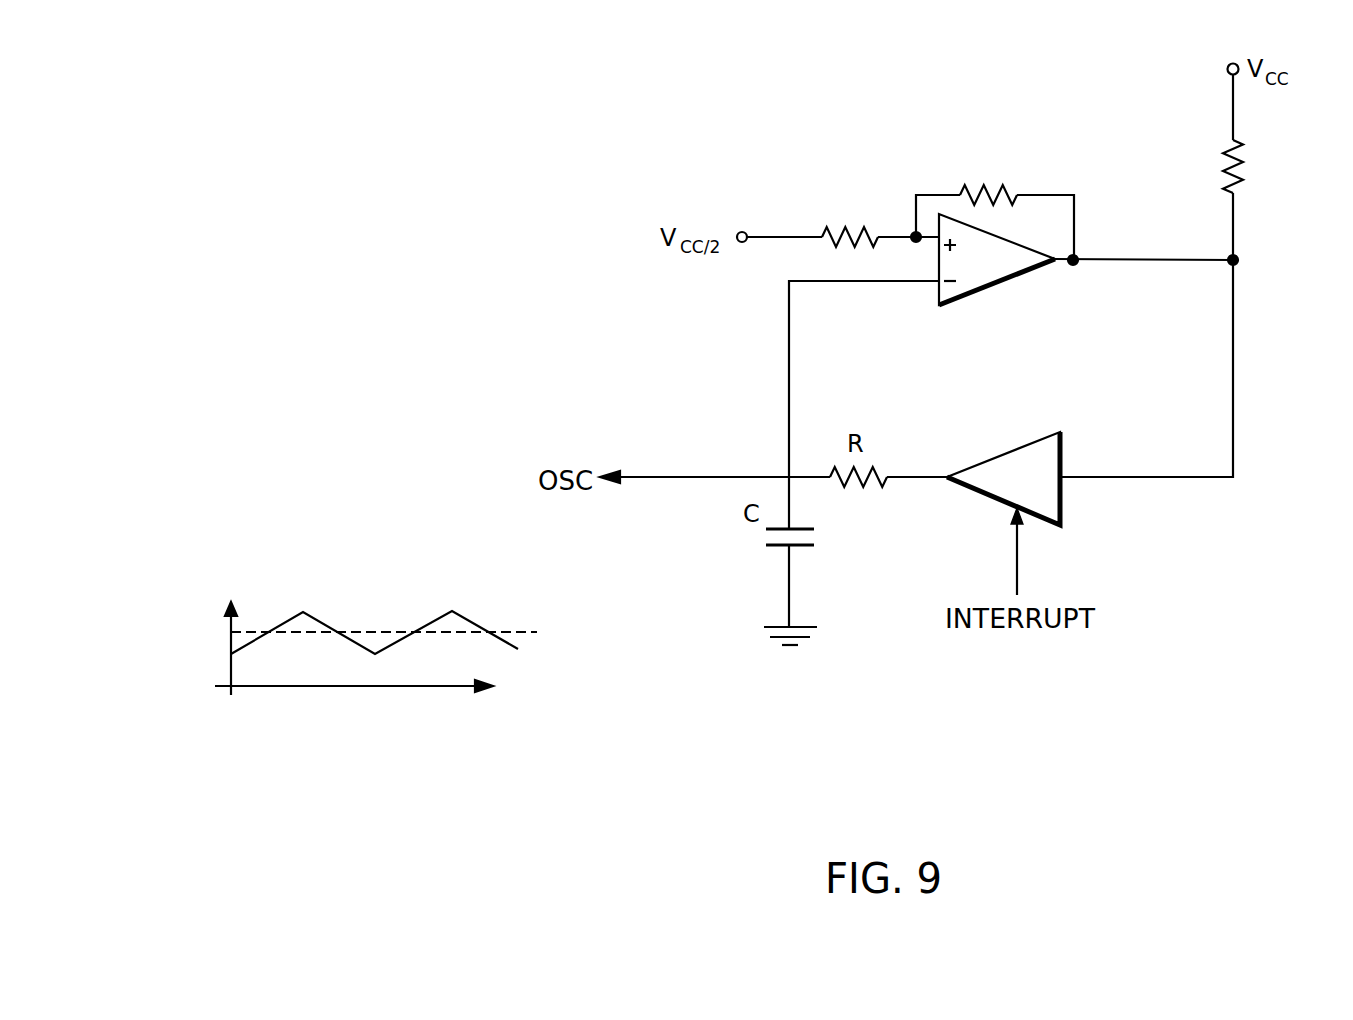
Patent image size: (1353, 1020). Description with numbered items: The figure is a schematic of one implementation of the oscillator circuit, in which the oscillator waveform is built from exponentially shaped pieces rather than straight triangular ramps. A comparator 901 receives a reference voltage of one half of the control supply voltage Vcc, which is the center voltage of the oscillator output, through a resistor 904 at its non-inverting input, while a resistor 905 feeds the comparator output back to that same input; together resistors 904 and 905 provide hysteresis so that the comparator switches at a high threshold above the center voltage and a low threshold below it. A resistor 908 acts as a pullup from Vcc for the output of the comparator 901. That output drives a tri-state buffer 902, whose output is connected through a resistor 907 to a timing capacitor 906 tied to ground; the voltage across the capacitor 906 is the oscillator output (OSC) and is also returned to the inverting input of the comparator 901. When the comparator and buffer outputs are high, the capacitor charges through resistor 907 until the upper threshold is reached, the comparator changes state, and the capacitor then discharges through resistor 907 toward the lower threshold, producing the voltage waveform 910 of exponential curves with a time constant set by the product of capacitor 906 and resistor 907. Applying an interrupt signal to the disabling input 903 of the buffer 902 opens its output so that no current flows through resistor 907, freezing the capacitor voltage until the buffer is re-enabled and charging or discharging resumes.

The comparator 901 is at (1003, 287).
The tri-state buffer 902 is at (1010, 447).
The disabling input 903 is at (1020, 550).
The resistor 904 is at (853, 227).
The resistor 905 is at (985, 182).
The capacitor 906 is at (782, 547).
The resistor 907 is at (847, 487).
The resistor 908 is at (1245, 168).
The voltage waveform 910 is at (570, 672).